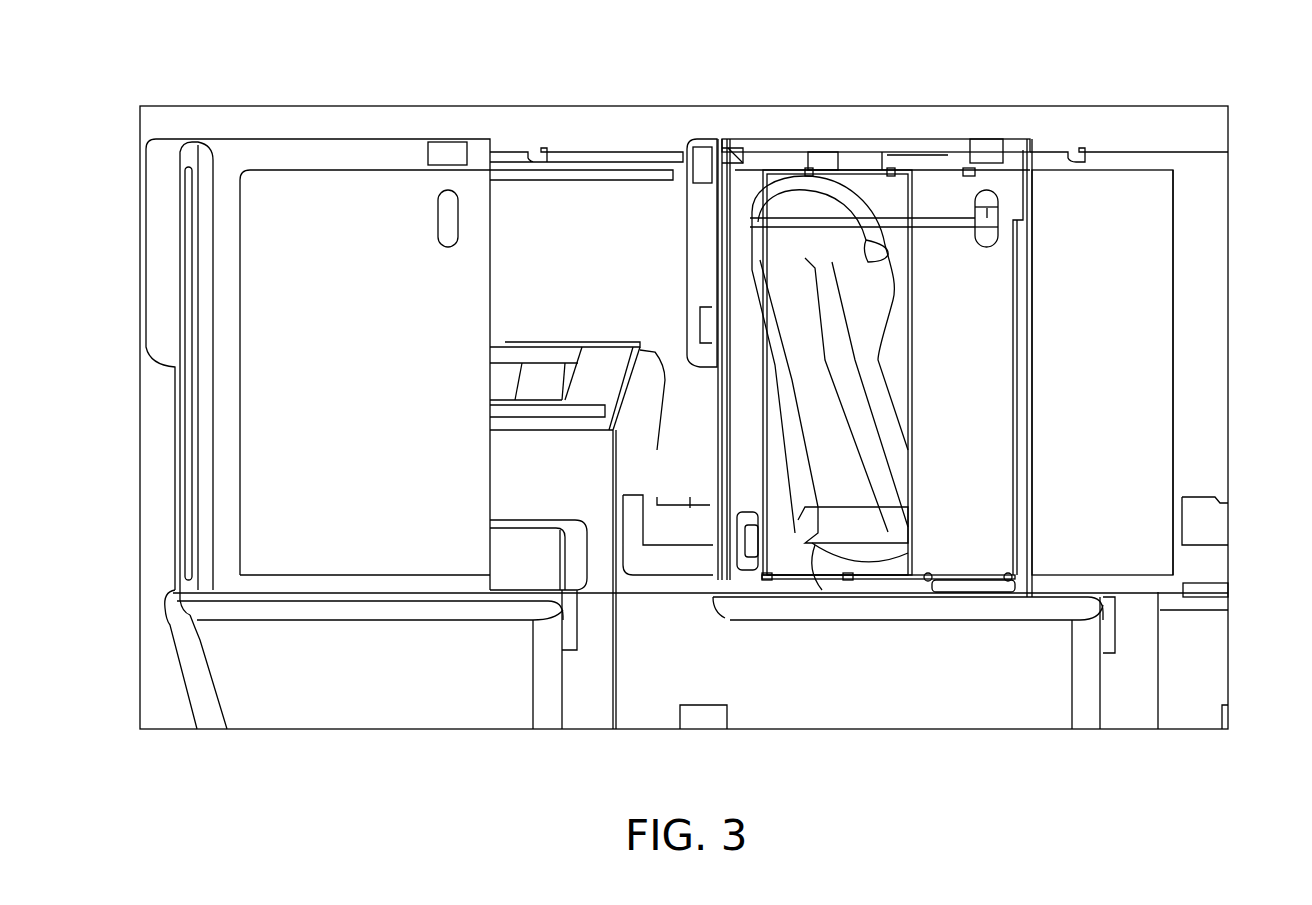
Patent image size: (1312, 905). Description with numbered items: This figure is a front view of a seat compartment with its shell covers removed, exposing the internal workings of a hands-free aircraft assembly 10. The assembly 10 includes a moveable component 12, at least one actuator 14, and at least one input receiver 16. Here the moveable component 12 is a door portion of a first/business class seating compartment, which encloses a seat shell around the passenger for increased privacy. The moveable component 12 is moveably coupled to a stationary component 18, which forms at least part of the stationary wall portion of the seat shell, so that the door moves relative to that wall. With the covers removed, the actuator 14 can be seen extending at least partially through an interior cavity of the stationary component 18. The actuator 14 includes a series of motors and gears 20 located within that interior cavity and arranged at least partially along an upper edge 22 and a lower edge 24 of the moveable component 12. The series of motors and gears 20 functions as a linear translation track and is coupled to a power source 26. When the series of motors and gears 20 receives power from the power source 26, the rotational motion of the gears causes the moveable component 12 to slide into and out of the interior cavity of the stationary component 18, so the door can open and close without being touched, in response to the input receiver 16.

The hands-free aircraft assembly 10 is at (893, 130).
The moveable component 12 is at (1142, 267).
The actuator 14 is at (787, 138).
The input receiver 16 is at (985, 190).
The stationary component 18 is at (845, 139).
The series of motors and gears 20 is at (952, 139).
The upper edge 22 is at (1125, 160).
The lower edge 24 is at (1147, 582).
The power source 26 is at (747, 570).